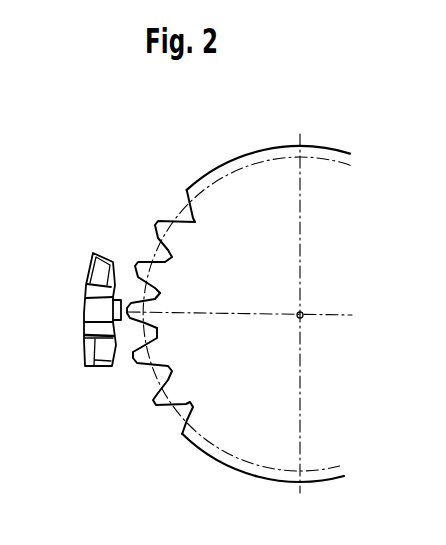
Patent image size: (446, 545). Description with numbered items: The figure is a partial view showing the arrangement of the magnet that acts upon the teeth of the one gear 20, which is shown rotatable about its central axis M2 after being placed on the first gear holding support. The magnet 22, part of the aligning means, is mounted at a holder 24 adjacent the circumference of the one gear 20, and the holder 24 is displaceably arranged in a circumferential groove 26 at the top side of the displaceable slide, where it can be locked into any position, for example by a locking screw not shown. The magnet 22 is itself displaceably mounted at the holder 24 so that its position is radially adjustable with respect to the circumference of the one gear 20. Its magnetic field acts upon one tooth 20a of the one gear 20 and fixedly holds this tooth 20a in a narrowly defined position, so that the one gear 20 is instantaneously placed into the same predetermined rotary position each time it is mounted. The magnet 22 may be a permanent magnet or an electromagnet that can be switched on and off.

The one gear 20 is at (243, 221).
The tooth 20a is at (138, 304).
The central axis M2 is at (303, 314).
The magnet 22 is at (97, 308).
The holder 24 is at (92, 328).
The circumferential groove 26 is at (86, 364).